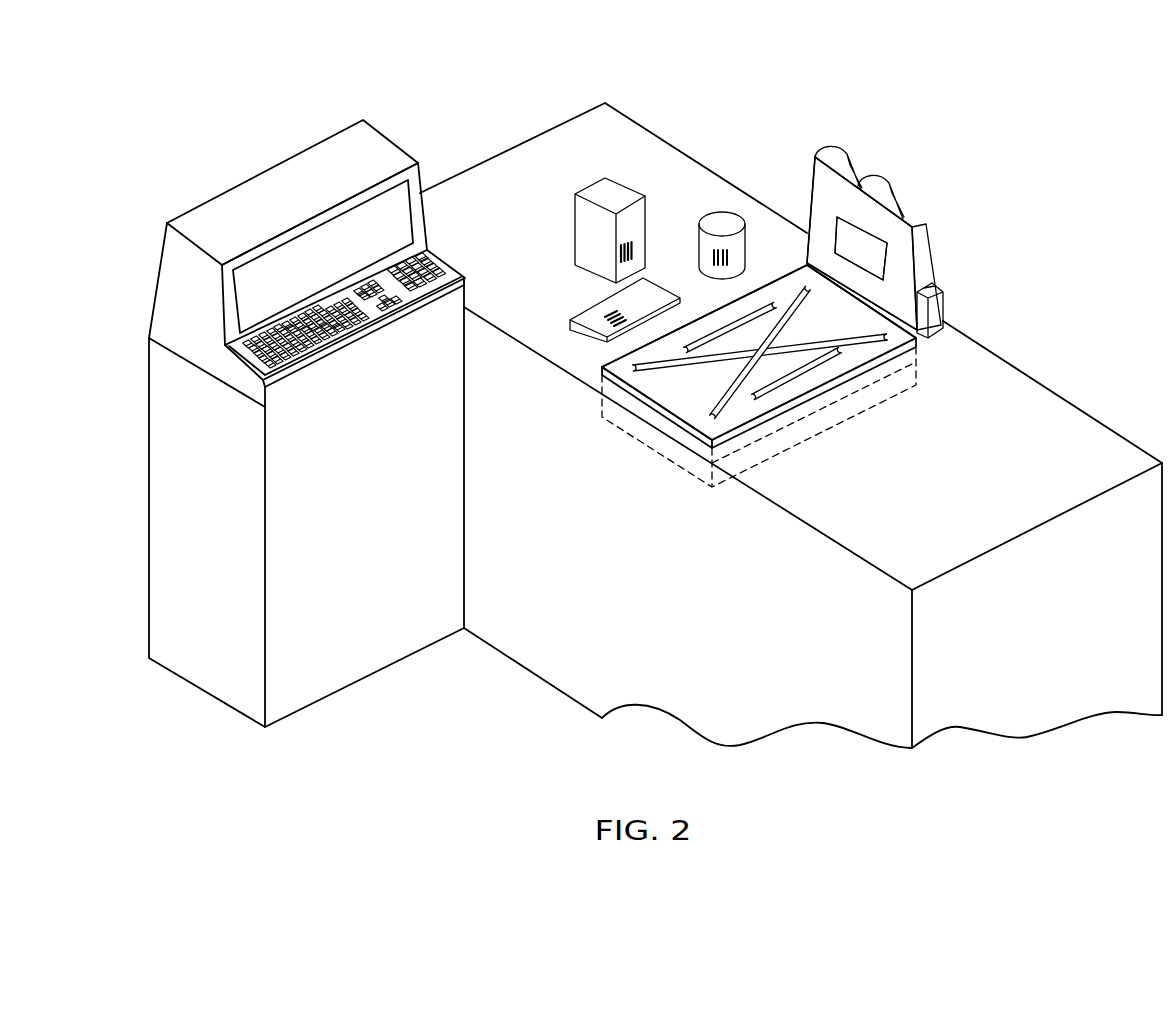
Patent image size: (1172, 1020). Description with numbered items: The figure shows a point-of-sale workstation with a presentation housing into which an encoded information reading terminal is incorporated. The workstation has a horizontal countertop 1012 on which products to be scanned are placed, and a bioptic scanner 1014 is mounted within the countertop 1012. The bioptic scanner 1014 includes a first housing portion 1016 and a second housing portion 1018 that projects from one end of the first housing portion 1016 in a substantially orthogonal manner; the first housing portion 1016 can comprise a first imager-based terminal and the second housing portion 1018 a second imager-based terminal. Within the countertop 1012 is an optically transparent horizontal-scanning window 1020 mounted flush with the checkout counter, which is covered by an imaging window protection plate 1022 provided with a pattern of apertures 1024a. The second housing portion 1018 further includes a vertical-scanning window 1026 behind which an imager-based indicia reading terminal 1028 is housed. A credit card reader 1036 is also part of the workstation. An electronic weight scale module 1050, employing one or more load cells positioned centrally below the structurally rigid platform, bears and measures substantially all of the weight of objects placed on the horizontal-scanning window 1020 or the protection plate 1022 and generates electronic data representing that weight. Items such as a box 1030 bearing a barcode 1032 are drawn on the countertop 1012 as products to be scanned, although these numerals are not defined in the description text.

The horizontal countertop 1012 is at (1024, 472).
The bioptic scanner 1014 is at (952, 230).
The first housing portion 1016 is at (802, 328).
The second housing portion 1018 is at (825, 217).
The horizontal-scanning window 1020 is at (733, 443).
The imaging window protection plate 1022 is at (672, 395).
The apertures 1024a is at (728, 405).
The vertical-scanning window 1026 is at (873, 255).
The imager-based indicia reading terminal 1028 is at (1001, 249).
The product box 1030 is at (602, 190).
The barcode 1032 is at (617, 257).
The credit card reader 1036 is at (943, 307).
The electronic weight scale module 1050 is at (880, 392).